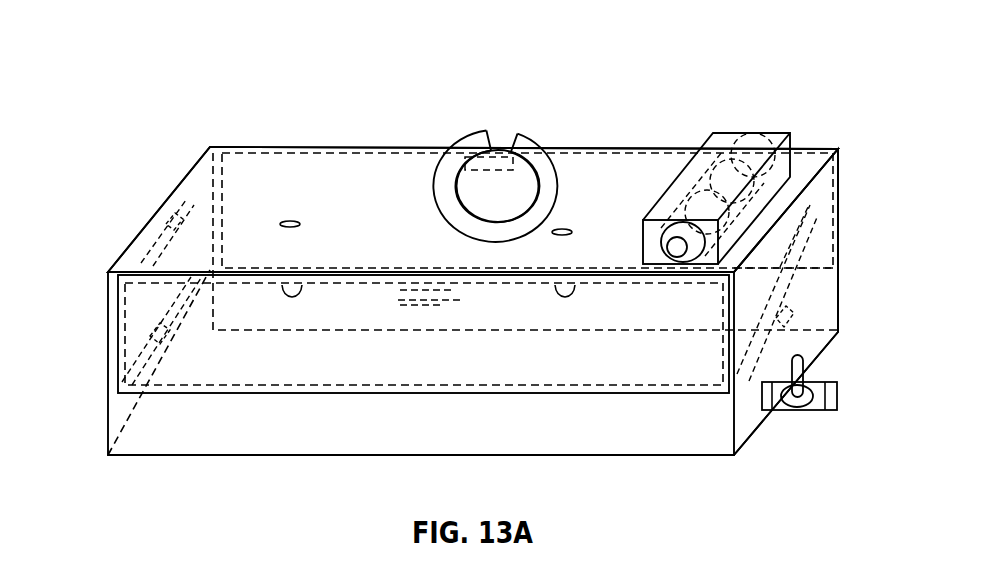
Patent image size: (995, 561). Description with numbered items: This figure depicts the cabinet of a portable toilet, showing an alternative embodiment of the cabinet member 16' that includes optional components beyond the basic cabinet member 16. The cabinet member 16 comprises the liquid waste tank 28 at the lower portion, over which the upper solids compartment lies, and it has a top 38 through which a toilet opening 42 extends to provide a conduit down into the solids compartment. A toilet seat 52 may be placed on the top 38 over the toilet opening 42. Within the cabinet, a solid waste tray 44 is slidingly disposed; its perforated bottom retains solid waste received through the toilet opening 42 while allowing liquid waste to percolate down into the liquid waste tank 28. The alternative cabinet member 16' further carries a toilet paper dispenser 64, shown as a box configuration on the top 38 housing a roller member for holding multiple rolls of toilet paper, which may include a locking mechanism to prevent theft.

The cabinet member 16 is at (469, 261).
The cabinet member (alternative embodiment) 16' is at (758, 220).
The top 38 is at (298, 172).
The toilet opening 42 is at (494, 197).
The toilet seat 52 is at (512, 150).
The toilet paper dispenser 64 is at (768, 133).
The solid waste tray 44 is at (820, 222).
The liquid waste tank 28 is at (707, 420).